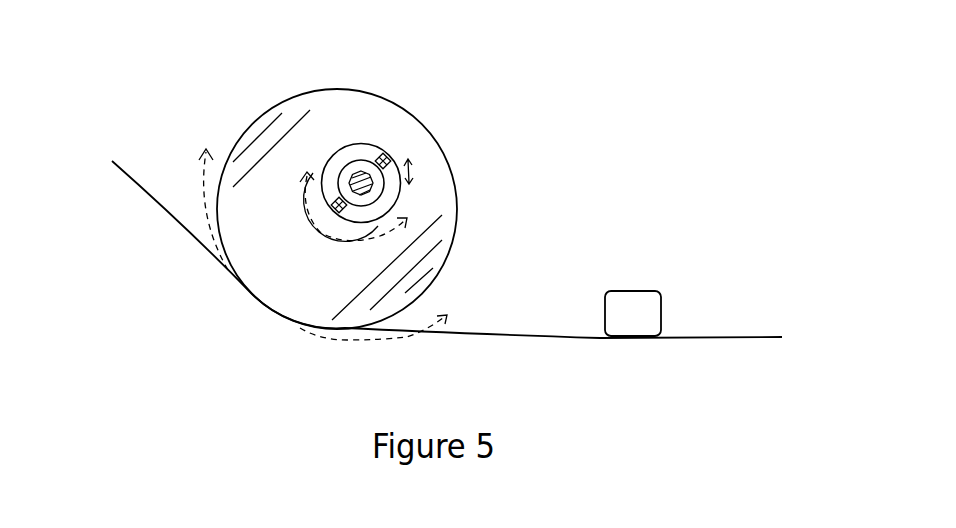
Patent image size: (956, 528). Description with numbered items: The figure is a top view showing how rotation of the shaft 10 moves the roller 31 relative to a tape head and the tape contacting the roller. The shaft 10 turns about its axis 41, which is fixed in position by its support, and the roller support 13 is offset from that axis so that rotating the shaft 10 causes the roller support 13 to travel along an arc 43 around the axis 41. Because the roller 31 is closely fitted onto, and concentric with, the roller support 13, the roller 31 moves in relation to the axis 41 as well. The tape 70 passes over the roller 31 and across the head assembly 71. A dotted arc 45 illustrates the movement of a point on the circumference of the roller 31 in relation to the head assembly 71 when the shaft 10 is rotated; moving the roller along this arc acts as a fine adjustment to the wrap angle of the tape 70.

The shaft 10 is at (380, 152).
The roller support 13 is at (305, 232).
The roller 31 is at (449, 185).
The axis 41 is at (347, 164).
The arc 43 is at (385, 243).
The dotted arc 45 is at (355, 348).
The tape 70 is at (167, 251).
The head assembly 71 is at (655, 283).